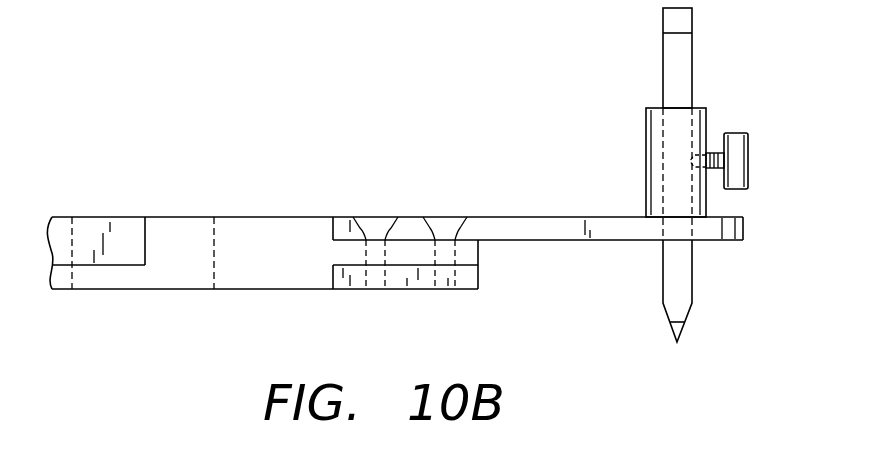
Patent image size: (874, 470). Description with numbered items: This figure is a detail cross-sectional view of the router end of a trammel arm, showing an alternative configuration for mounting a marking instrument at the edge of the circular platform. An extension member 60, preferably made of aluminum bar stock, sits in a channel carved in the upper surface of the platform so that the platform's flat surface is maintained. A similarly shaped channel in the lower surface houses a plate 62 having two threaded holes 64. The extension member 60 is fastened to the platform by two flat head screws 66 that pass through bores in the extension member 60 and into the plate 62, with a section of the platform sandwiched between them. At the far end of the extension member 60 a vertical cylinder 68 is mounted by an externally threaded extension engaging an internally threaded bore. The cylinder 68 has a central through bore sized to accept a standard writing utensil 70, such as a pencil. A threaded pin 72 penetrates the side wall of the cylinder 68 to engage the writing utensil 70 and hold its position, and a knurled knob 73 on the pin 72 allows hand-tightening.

The extension member 60 is at (535, 217).
The plate 62 is at (407, 289).
The threaded holes 64 is at (368, 282).
The flat head screws 66 is at (442, 217).
The vertical cylinder 68 is at (654, 120).
The writing utensil 70 is at (670, 50).
The threaded pin 72 is at (713, 155).
The knurled knob 73 is at (733, 158).